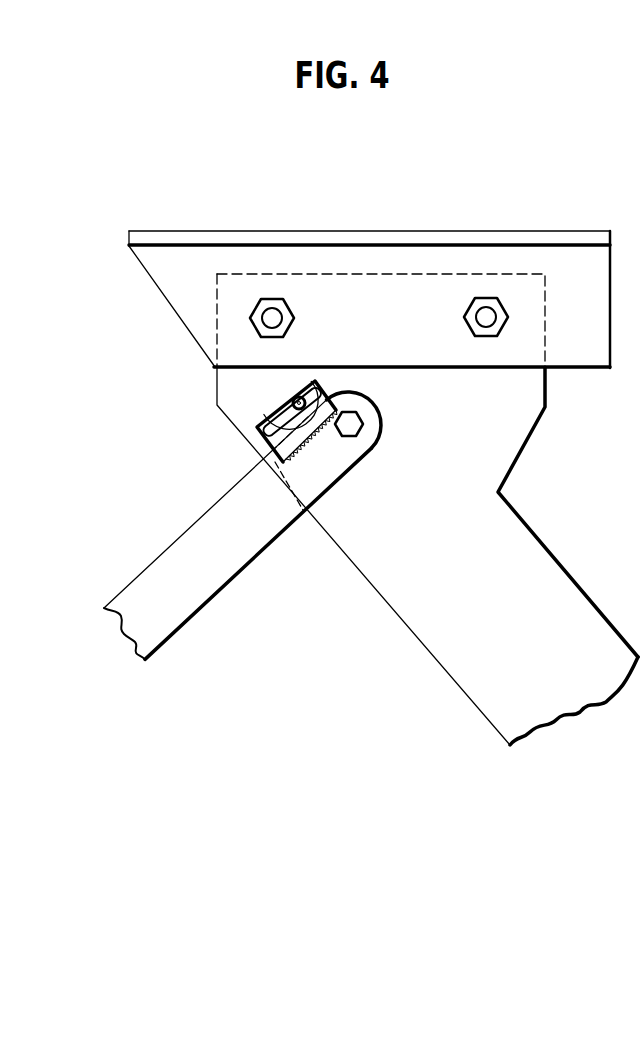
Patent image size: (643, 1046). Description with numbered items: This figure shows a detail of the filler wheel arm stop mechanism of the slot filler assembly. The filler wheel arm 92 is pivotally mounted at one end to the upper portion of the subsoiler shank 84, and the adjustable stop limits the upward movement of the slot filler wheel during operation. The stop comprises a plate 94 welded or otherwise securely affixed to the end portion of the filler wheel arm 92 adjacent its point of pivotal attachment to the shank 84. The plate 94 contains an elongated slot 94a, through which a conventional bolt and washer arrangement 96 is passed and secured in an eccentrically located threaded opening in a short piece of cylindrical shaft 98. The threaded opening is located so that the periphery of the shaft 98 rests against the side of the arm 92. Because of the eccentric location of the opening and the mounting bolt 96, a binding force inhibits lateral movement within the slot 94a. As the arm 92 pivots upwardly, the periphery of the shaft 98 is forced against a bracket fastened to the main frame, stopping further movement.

The shank 84 is at (455, 643).
The filler wheel arm 92 is at (217, 557).
The plate 94 is at (270, 448).
The elongated slot 94a is at (268, 433).
The bolt and washer arrangement 96 is at (303, 399).
The cylindrical shaft 98 is at (272, 395).